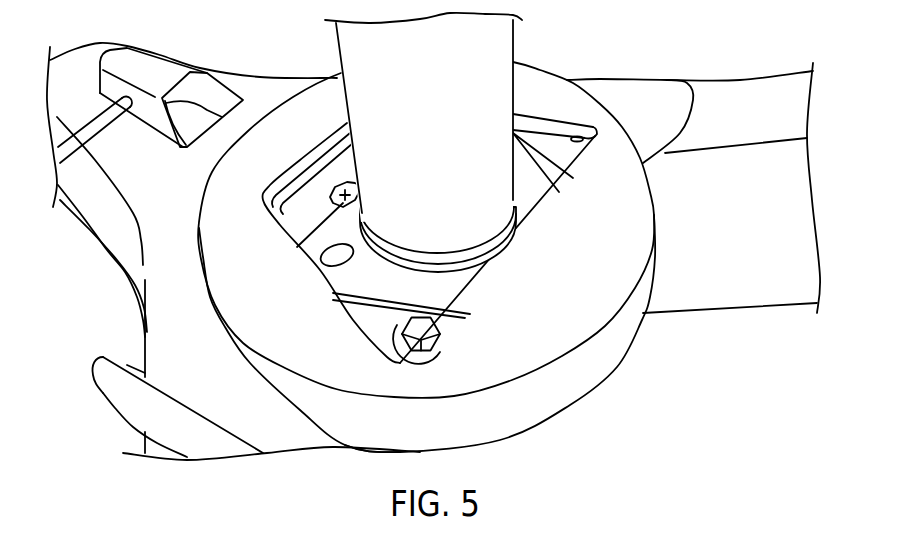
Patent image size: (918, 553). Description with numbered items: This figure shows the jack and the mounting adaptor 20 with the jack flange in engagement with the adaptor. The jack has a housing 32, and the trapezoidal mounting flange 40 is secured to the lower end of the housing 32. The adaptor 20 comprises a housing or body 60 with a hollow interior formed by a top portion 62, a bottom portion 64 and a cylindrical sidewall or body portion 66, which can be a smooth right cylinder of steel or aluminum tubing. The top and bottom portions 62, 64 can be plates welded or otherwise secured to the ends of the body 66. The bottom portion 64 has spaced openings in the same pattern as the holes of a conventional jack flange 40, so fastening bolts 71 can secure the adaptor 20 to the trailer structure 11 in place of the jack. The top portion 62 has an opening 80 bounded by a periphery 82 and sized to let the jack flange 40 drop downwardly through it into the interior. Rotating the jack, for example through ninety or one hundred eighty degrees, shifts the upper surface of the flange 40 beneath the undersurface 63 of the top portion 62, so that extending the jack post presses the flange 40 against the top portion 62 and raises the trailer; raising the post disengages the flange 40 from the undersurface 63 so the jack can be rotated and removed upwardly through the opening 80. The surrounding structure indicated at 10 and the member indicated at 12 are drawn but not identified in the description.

The base 10 is at (98, 264).
The trailer structure 11 is at (163, 317).
The clamp block 12 is at (86, 55).
The mounting adaptor 20 is at (538, 57).
The housing 32 is at (350, 60).
The mounting flange 40 is at (463, 297).
The housing or body 60 is at (656, 218).
The top portion 62 is at (360, 377).
The undersurface 63 is at (590, 135).
The bottom portion 64 is at (370, 330).
The sidewall or body portion 66 is at (370, 433).
The fastening bolts 71 is at (345, 194).
The opening 80 is at (548, 196).
The periphery 82 is at (558, 127).